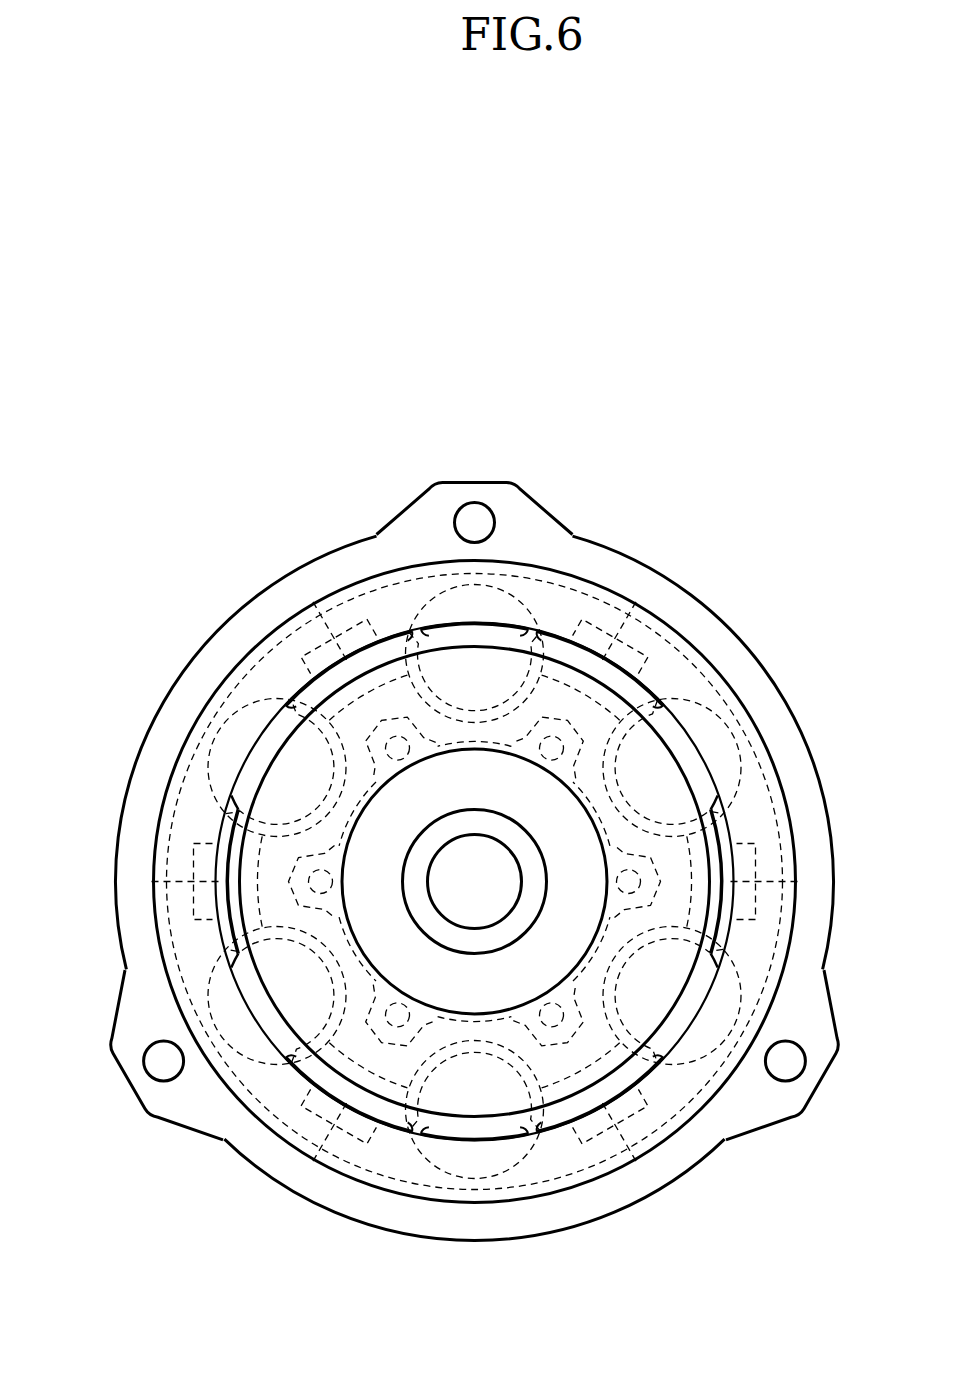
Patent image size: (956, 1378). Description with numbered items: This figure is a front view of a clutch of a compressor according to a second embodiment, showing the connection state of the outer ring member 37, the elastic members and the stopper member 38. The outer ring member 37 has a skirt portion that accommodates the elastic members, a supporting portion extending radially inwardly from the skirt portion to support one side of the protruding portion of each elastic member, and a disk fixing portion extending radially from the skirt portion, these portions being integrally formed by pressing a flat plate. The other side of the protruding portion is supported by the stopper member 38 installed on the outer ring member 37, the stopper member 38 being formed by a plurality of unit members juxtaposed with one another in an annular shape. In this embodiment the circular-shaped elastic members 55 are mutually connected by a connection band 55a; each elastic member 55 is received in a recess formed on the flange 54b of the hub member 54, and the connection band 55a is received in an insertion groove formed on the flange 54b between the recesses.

The outer ring member 37 is at (280, 597).
The stopper member 38 is at (750, 813).
The hub member 54 is at (486, 985).
The flange 54b is at (595, 722).
The elastic member 55 is at (260, 752).
The connection band 55a is at (233, 838).